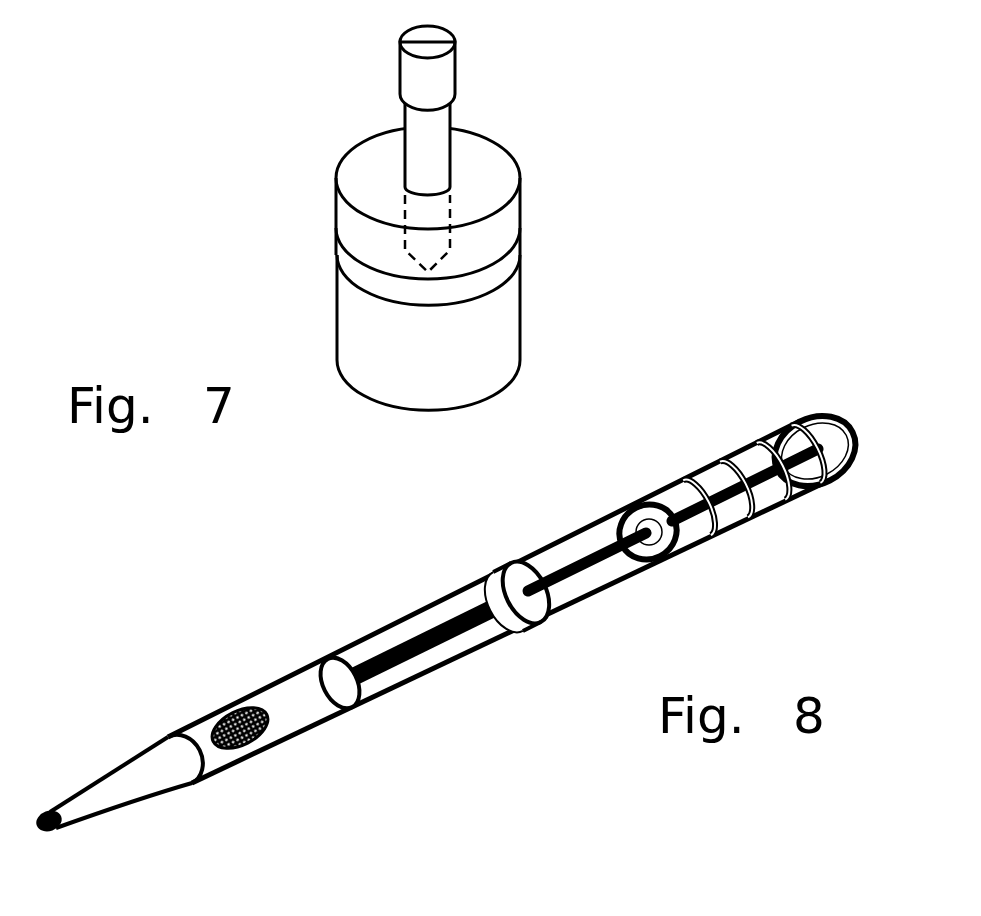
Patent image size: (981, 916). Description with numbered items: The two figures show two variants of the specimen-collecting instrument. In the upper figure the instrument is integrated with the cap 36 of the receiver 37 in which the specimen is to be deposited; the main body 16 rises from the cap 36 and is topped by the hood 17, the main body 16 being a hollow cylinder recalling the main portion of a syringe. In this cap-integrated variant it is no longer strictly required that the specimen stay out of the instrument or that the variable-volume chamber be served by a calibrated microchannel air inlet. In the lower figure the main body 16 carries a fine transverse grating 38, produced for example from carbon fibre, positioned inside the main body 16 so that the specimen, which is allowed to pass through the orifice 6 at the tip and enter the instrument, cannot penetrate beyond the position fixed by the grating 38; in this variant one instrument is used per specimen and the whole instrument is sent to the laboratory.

In FIG. 8, the orifice 6 is at (36, 823).
In FIG. 7, the main body 16 is at (435, 152).
In FIG. 8, the main body 16 is at (310, 727).
In FIG. 7, the hood 17 is at (463, 68).
In FIG. 7, the cap 36 is at (500, 232).
In FIG. 7, the receiver 37 is at (490, 343).
In FIG. 8, the transverse grating 38 is at (217, 702).